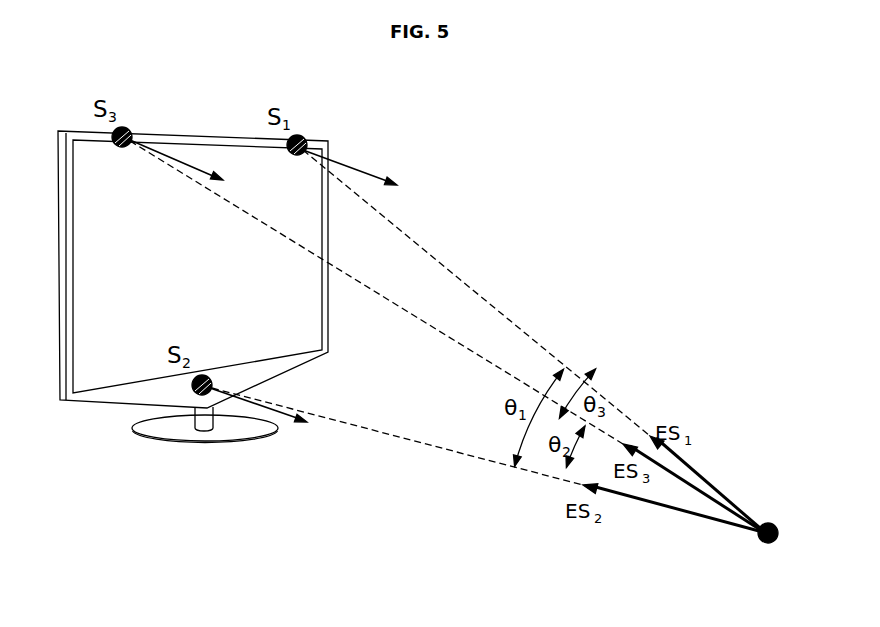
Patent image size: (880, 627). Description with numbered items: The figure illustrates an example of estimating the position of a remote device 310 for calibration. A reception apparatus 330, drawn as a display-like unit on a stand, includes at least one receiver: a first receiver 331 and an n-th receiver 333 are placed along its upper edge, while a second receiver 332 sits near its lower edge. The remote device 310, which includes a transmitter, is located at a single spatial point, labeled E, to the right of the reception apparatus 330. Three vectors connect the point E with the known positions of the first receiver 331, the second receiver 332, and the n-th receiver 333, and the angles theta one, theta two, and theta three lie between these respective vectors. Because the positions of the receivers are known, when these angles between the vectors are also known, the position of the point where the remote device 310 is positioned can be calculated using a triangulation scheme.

The remote device 310 is at (767, 543).
The reception apparatus 330 is at (60, 383).
The first receiver 331 is at (314, 129).
The second receiver 332 is at (216, 368).
The n-th receiver 333 is at (147, 120).